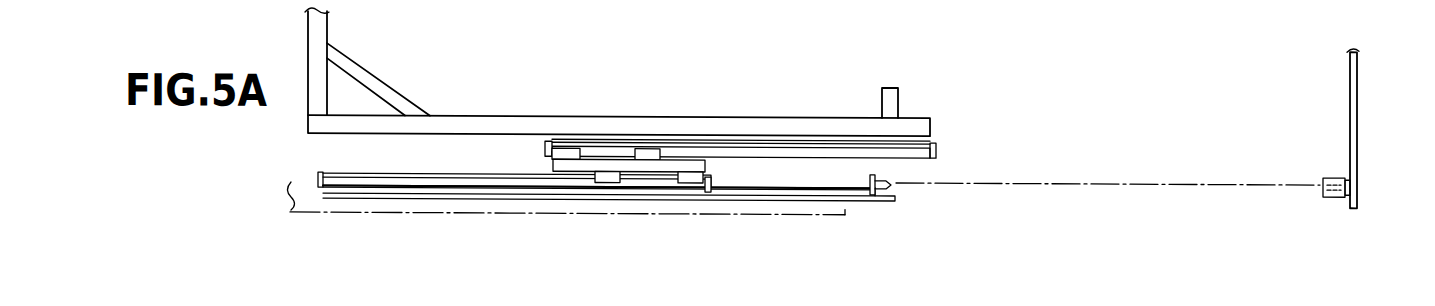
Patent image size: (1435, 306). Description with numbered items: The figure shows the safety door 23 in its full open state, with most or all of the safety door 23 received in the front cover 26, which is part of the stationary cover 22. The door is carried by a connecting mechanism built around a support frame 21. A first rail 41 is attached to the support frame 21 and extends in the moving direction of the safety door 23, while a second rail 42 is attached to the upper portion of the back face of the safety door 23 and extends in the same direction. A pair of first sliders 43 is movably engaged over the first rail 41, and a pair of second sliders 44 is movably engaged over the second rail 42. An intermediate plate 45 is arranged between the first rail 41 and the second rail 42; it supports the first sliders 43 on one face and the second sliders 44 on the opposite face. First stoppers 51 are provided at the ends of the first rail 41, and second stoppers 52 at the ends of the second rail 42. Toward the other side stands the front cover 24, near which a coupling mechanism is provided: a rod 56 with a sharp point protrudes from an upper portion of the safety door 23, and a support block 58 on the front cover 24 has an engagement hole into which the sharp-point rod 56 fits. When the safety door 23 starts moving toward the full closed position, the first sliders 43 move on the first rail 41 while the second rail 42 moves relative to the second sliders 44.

The support frame 21 is at (612, 113).
The stationary cover 22 is at (567, 235).
The safety door 23 is at (867, 198).
The front cover 24 is at (1358, 90).
The front cover 26 is at (443, 211).
The first rail 41 is at (746, 144).
The second rail 42 is at (538, 176).
The first sliders 43 is at (568, 146).
The second sliders 44 is at (607, 181).
The intermediate plate 45 is at (555, 164).
The first stoppers 51 is at (544, 146).
The second stoppers 52 is at (716, 179).
The rod 56 is at (893, 182).
The support block 58 is at (1333, 193).